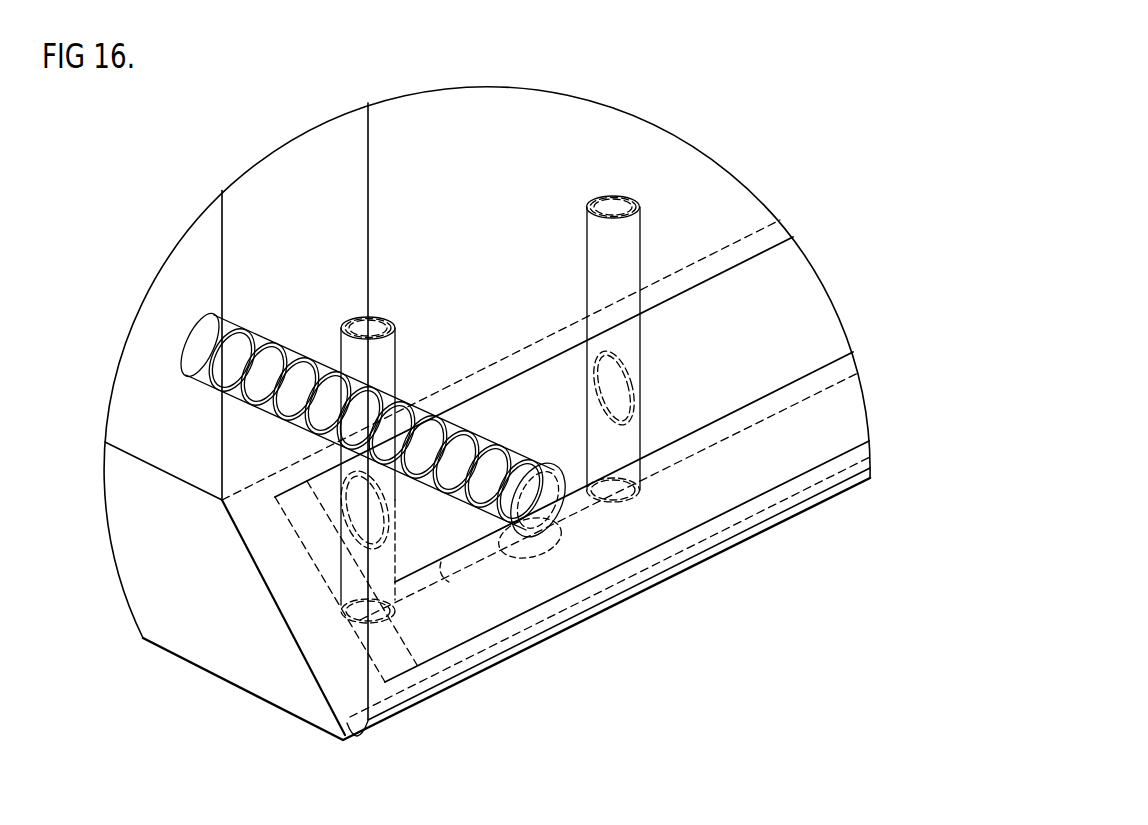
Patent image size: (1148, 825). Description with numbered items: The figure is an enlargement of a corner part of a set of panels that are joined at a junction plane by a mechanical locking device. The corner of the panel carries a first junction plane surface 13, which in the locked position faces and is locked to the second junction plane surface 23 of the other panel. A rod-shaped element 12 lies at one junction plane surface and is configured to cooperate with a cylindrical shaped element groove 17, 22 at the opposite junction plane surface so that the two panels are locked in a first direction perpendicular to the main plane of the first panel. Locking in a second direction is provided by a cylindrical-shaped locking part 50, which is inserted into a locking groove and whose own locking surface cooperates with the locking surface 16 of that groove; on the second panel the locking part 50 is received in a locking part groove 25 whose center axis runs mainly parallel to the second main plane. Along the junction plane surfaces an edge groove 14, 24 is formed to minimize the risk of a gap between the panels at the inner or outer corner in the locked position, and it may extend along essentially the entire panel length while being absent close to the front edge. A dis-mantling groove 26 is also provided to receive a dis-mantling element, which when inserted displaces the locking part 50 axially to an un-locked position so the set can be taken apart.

The rod-shaped element 12 is at (627, 242).
The first junction plane surface 13 is at (257, 538).
The edge groove 14 is at (750, 307).
The locking surface 16 is at (552, 508).
The element groove 17 is at (622, 194).
The element groove 22 is at (635, 500).
The second junction plane surface 23 is at (278, 575).
The edge groove 24 is at (750, 326).
The locking part groove 25 is at (480, 523).
The dis-mantling groove 26 is at (820, 383).
The locking part 50 is at (547, 547).